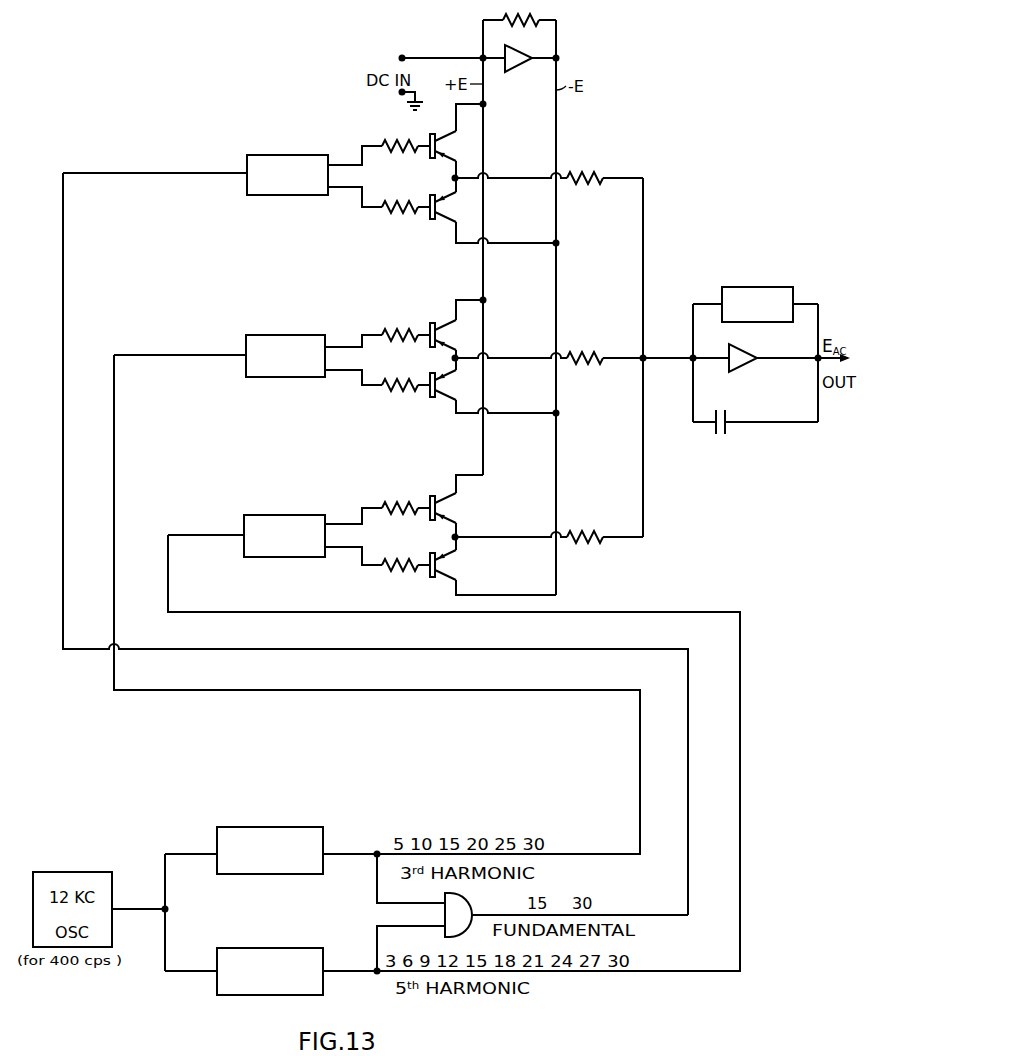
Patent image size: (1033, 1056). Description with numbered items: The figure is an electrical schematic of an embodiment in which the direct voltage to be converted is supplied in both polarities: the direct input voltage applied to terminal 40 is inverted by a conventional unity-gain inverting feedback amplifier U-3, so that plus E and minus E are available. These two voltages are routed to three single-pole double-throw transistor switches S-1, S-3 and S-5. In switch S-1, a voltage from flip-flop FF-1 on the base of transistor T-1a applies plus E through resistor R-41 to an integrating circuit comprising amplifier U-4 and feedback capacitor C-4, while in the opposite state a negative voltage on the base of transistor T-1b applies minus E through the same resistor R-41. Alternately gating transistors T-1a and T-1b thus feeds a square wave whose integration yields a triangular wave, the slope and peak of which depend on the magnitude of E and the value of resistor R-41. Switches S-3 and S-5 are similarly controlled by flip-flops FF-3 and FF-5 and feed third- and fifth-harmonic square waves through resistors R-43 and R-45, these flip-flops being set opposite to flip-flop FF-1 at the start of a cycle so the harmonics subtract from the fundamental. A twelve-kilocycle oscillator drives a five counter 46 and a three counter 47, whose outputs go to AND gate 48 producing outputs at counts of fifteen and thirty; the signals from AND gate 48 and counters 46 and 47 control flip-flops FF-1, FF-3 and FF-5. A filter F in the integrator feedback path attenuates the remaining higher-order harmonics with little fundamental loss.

The input terminal 40 is at (441, 48).
The "5" counter 46 is at (272, 874).
The "3" counter 47 is at (272, 995).
The AND gate 48 is at (460, 934).
The unity-gain inverting feedback amplifier U-3 is at (508, 80).
The amplifier U-4 is at (744, 346).
The transistor T-1a is at (436, 136).
The transistor T-1b is at (434, 218).
The single-pole double-throw transistor switch S-1 is at (471, 174).
The single-pole double-throw transistor switch S-3 is at (471, 357).
The single-pole double-throw transistor switch S-5 is at (469, 535).
The flip-flop FF-1 is at (287, 175).
The flip-flop FF-3 is at (285, 356).
The flip-flop FF-5 is at (284, 536).
The resistor R-41 is at (572, 186).
The resistor R-43 is at (572, 366).
The resistor R-45 is at (572, 545).
The filter F is at (760, 282).
The feedback capacitor C-4 is at (725, 434).